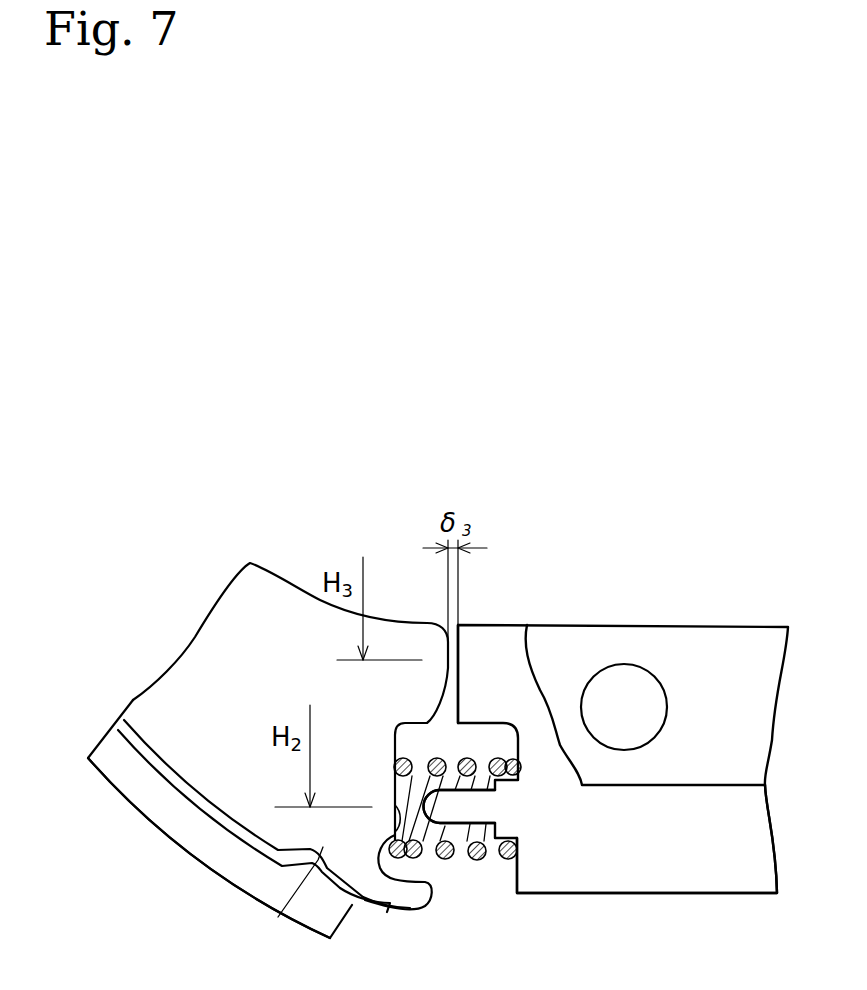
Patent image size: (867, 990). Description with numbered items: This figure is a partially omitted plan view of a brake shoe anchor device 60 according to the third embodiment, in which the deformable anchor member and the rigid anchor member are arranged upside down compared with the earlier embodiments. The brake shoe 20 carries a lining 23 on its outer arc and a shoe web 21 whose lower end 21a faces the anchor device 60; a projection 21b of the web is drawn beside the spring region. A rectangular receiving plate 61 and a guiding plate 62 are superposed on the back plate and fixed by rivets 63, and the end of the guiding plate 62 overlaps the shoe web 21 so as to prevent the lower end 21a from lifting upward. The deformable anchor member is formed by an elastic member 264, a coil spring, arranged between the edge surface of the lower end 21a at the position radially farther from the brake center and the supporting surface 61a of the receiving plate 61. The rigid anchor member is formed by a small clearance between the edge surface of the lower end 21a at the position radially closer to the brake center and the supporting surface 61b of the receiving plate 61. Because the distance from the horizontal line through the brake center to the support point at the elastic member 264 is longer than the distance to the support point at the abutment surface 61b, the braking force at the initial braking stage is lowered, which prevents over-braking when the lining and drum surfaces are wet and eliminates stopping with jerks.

The brake shoe / blade 20 is at (133, 700).
The shoe web 21 is at (236, 582).
The lower end of shoe web 21a is at (278, 917).
The shoe web projection 21b is at (398, 826).
The friction lining 23 is at (155, 825).
The elastic member 264 is at (443, 862).
The anchor device 60 is at (713, 625).
The receiving plate 61 is at (702, 885).
The supporting surface 61a is at (483, 817).
The supporting surface 61b is at (456, 688).
The guiding plate 62 is at (768, 722).
The rivet 63 is at (627, 683).